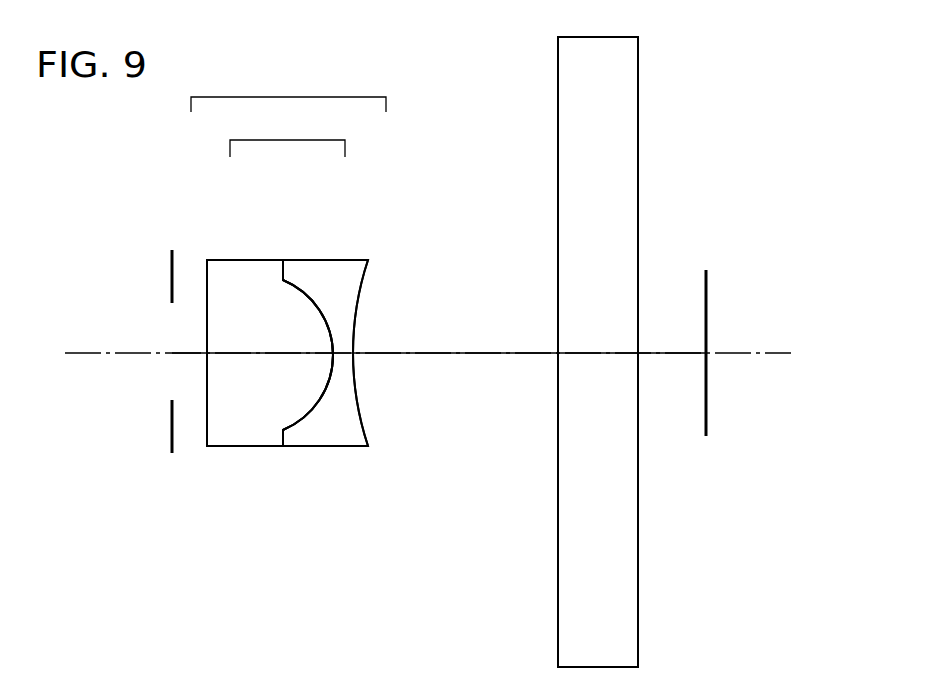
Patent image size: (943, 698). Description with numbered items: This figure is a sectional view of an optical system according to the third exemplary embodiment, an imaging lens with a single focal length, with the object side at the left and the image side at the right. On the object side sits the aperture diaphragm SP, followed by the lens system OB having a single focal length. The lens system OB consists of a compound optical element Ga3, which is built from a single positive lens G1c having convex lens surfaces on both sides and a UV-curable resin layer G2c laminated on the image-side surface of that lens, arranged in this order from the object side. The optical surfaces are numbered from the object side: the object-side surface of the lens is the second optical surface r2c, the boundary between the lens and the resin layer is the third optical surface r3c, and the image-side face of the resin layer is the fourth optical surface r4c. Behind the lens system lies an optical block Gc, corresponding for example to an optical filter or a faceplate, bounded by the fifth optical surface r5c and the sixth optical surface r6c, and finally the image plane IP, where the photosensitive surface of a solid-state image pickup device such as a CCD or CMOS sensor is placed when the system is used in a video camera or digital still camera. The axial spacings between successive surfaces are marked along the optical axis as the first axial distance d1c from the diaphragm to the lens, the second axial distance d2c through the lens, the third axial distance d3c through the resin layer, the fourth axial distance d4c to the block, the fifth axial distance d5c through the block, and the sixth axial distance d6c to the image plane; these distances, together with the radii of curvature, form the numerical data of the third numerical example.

The aperture diaphragm SP is at (171, 261).
The lens system OB is at (288, 91).
The compound optical element Ga3 is at (287, 136).
The positive lens G1c is at (243, 273).
The UV-curable resin layer G2c is at (325, 273).
The second optical surface r2c is at (207, 283).
The third optical surface r3c is at (283, 281).
The fourth optical surface r4c is at (367, 288).
The first axial distance d1c is at (192, 354).
The second axial distance d2c is at (252, 365).
The third axial distance d3c is at (345, 354).
The fourth axial distance d4c is at (445, 354).
The fifth axial distance d5c is at (576, 354).
The sixth axial distance d6c is at (670, 354).
The optical block Gc is at (620, 37).
The fifth optical surface r5c is at (558, 78).
The sixth optical surface r6c is at (638, 98).
The image plane IP is at (707, 283).